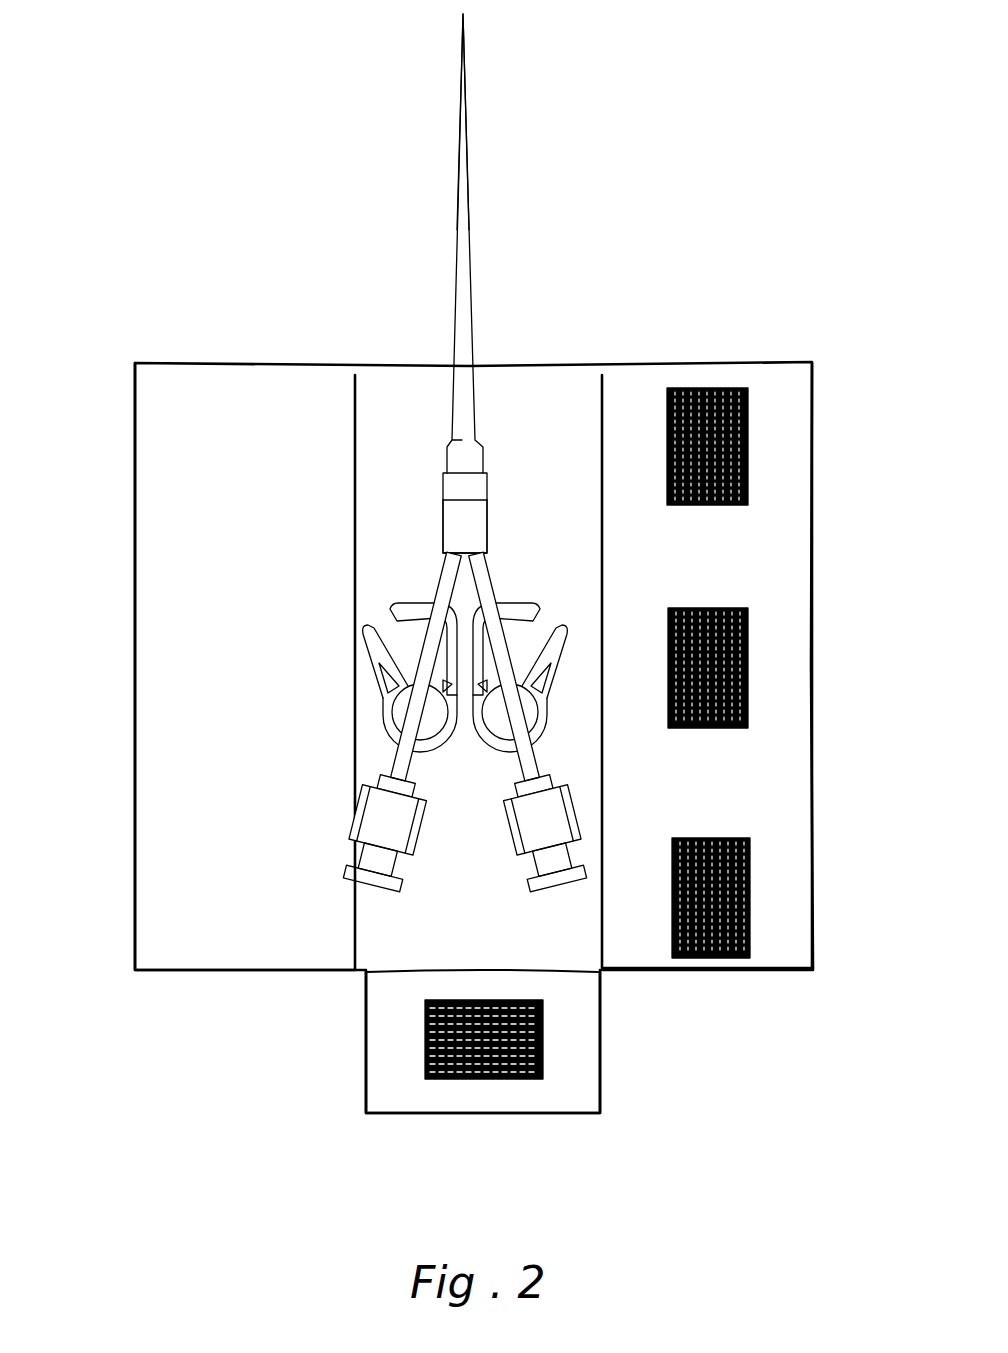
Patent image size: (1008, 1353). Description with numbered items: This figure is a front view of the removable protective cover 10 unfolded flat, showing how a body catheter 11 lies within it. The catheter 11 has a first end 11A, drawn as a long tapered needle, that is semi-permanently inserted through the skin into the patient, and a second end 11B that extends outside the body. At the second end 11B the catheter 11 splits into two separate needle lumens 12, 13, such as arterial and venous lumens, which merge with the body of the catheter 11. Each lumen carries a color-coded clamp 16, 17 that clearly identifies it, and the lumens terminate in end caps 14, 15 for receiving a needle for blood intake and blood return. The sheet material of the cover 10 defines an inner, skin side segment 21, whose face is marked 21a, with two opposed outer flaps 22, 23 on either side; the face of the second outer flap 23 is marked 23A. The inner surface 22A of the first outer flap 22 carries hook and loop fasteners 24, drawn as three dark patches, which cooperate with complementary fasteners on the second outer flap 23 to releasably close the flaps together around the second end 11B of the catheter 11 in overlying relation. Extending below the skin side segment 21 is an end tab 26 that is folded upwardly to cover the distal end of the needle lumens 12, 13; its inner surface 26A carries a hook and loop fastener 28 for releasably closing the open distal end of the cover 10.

The removable protective cover 10 is at (783, 343).
The body catheter 11 is at (477, 313).
The first end 11A is at (470, 158).
The second end 11B is at (440, 555).
The needle lumen 12 is at (398, 760).
The needle lumen 13 is at (545, 745).
The end cap 14 is at (372, 860).
The end cap 15 is at (570, 860).
The clamp 16 is at (362, 635).
The clamp 17 is at (566, 624).
The inner skin side segment 21 is at (568, 382).
The central panel surface 21a is at (462, 941).
The first outer flap 22 is at (795, 553).
The inner surface of the first outer flap 22A is at (735, 572).
The second outer flap 23 is at (165, 543).
The left panel inner surface 23A is at (244, 426).
The hook and loop fasteners 24 is at (748, 452).
The end tab 26 is at (588, 1097).
The inner surface of the end tab 26A is at (404, 1059).
The hook and loop fasteners 28 is at (545, 1045).